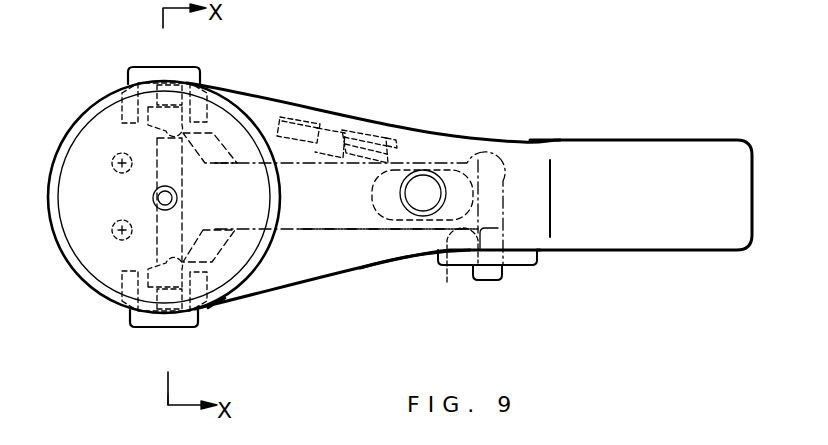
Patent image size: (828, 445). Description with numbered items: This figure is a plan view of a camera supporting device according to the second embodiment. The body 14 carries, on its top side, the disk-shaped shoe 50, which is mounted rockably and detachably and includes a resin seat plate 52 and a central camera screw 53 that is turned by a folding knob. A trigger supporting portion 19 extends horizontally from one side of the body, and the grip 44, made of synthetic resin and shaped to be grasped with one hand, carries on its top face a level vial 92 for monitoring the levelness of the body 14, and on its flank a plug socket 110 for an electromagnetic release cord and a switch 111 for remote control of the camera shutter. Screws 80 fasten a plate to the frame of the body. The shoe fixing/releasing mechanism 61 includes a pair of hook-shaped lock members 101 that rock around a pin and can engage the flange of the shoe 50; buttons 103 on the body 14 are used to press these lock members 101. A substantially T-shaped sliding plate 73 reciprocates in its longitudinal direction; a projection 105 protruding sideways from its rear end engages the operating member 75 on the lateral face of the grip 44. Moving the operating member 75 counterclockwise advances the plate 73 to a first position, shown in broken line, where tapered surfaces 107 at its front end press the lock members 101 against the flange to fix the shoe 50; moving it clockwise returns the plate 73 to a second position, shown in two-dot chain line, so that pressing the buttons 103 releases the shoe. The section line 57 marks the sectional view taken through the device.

The body 14 is at (112, 84).
The trigger supporting portion 19 is at (378, 254).
The grip 44 is at (681, 138).
The shoe 50 is at (257, 282).
The seat plate 52 is at (230, 117).
The camera screw 53 is at (177, 199).
The section line X-X 57 is at (196, 420).
The shoe fixing/releasing mechanism 61 is at (214, 312).
The sliding plate 73 is at (336, 226).
The operating member 75 is at (480, 283).
The screws 80 is at (112, 164).
The level vial 92 is at (418, 183).
The lock members 101 is at (122, 100).
The buttons 103 is at (160, 69).
The projection 105 is at (463, 236).
The tapered surfaces 107 is at (122, 130).
The plug socket 110 is at (300, 116).
The switch 111 is at (372, 129).